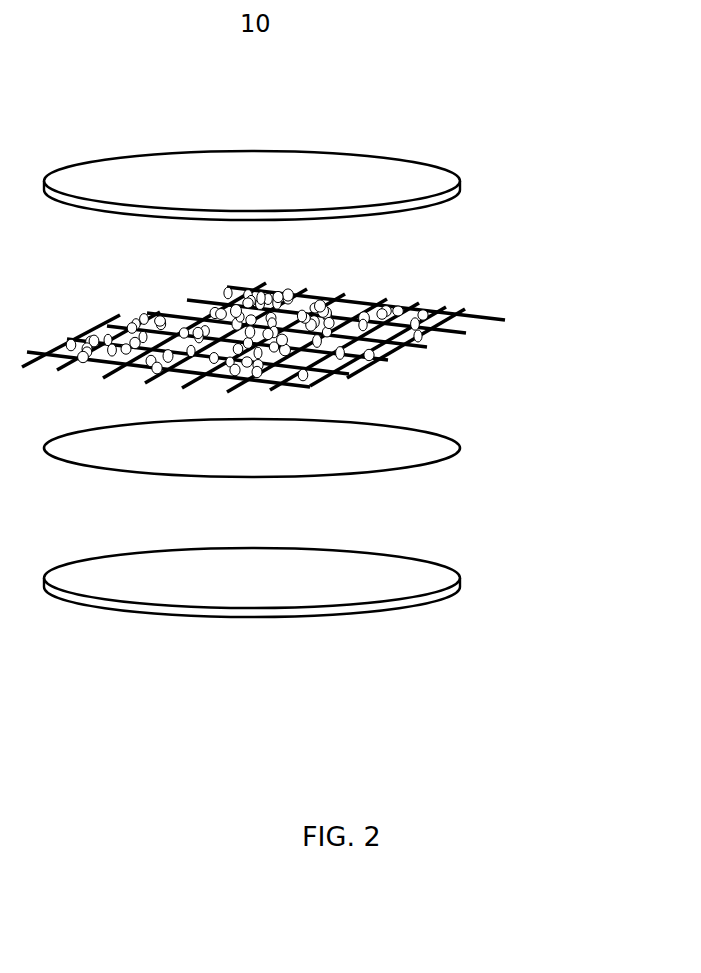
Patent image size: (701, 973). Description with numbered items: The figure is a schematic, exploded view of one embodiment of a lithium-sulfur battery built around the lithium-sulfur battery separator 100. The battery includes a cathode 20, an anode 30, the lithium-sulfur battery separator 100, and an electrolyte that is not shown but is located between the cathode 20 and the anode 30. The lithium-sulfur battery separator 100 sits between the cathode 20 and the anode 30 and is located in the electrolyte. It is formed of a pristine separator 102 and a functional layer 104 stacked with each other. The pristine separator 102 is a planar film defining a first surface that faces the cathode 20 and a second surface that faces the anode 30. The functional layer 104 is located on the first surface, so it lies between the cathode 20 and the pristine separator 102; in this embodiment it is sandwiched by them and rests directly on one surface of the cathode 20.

The cathode 20 is at (457, 171).
The anode 30 is at (457, 573).
The lithium-sulfur battery separator 100 is at (325, 353).
The pristine separator 102 is at (293, 419).
The functional layer 104 is at (378, 289).